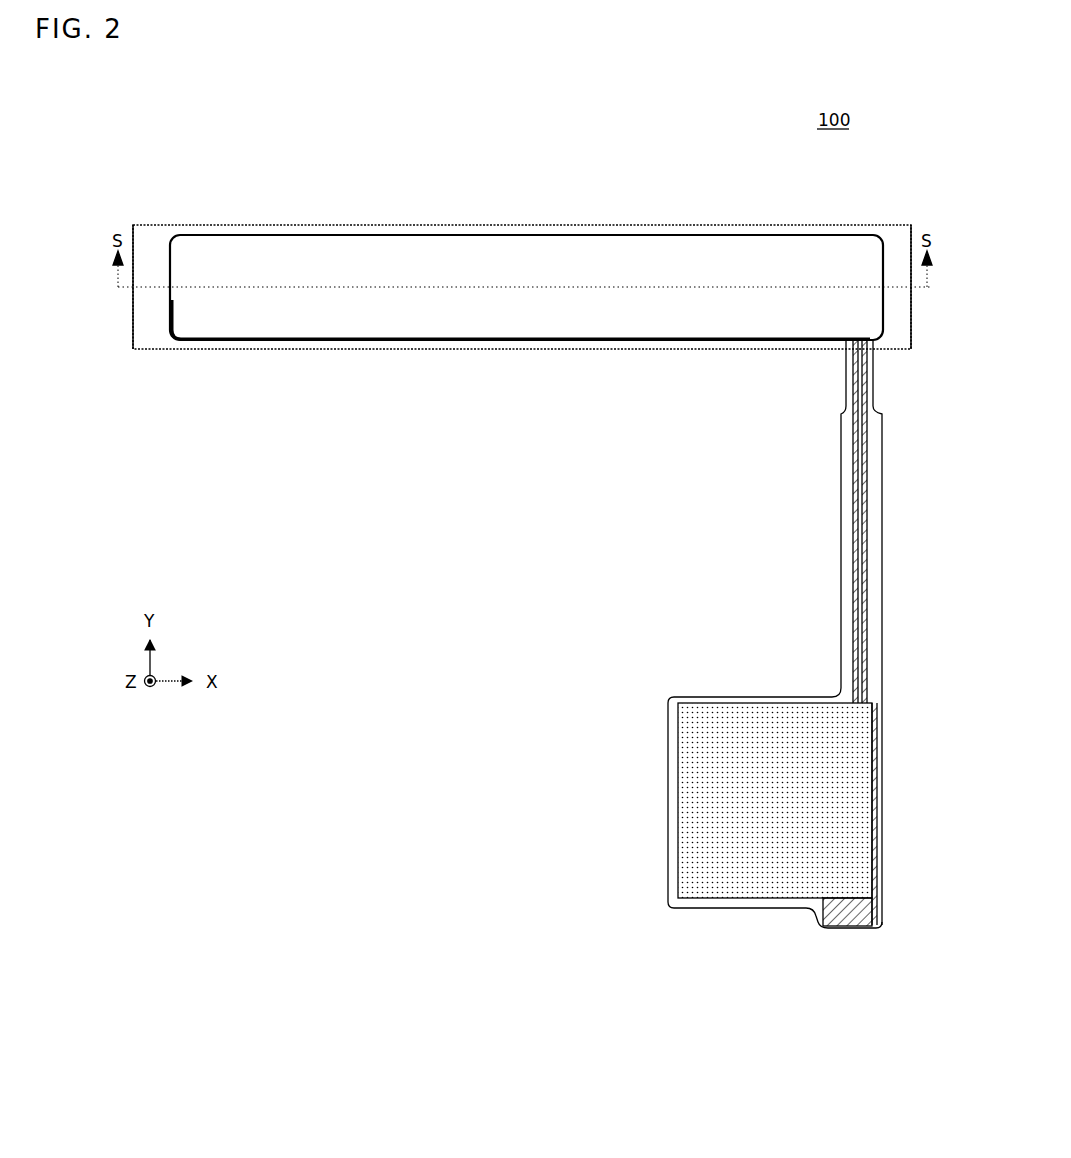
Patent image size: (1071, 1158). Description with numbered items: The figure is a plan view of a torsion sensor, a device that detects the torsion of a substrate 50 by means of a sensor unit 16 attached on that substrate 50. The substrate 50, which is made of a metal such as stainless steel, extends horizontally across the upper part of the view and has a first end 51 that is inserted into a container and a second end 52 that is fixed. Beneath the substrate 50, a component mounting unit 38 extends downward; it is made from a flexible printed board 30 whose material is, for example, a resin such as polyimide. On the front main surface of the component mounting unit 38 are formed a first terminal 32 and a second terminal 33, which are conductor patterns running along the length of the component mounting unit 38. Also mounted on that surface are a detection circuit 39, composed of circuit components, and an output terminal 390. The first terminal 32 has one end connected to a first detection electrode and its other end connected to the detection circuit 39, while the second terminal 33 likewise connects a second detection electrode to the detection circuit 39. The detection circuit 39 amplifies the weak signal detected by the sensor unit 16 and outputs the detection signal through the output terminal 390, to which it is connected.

The sensor unit 16 is at (610, 253).
The substrate 50 is at (355, 349).
The first end 51 is at (160, 323).
The second end 52 is at (898, 330).
The flexible printed board 30 is at (839, 657).
The first terminal 32 is at (857, 576).
The second terminal 33 is at (865, 588).
The component mounting unit 38 is at (841, 508).
The detection circuit 39 is at (698, 799).
The output terminal 390 is at (831, 928).